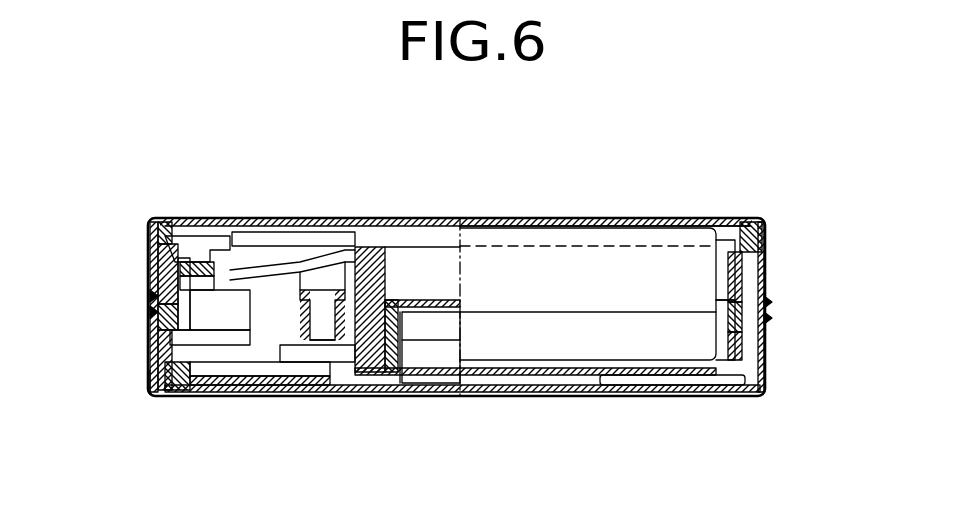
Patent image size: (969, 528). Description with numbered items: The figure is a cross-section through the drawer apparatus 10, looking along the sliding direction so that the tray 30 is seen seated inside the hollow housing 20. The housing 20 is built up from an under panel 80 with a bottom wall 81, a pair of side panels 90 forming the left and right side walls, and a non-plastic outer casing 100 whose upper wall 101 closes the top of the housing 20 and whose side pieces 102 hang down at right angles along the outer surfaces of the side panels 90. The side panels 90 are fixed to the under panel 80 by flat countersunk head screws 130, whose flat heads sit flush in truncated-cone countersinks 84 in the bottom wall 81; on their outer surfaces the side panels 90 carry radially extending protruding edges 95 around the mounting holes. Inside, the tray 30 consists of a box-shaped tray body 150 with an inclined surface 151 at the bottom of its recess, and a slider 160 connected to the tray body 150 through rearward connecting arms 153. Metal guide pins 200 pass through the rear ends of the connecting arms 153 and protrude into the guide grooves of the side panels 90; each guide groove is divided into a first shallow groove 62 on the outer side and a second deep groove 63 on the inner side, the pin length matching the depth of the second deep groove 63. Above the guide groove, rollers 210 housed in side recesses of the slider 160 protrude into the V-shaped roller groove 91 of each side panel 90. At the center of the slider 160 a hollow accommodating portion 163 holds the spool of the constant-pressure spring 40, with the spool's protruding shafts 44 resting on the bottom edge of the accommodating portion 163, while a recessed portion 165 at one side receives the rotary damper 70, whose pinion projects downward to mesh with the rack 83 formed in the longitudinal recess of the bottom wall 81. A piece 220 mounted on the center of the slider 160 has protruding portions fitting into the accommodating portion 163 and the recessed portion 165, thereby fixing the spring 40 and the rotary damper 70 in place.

The drawer apparatus 10 is at (706, 200).
The hollow housing 20 is at (650, 220).
The tray 30 is at (670, 378).
The constant-pressure spring (spring device) 40 is at (442, 370).
The protruding shafts 44 is at (396, 375).
The first shallow groove 62 is at (750, 340).
The second deep groove 63 is at (160, 338).
The rotary damper 70 is at (330, 380).
The under panel 80 is at (585, 390).
The bottom wall 81 is at (548, 388).
The rack 83 is at (318, 382).
The countersinks 84 is at (152, 394).
The side panels 90 is at (152, 222).
The roller groove 91 is at (172, 244).
The protruding edges 95 is at (150, 316).
The outer casing 100 is at (352, 222).
The upper wall 101 is at (165, 228).
The side pieces 102 is at (760, 246).
The flat countersunk head screws 130 is at (172, 392).
The tray body 150 is at (527, 275).
The inclined surface 151 is at (590, 320).
The connecting arms 153 is at (235, 382).
The slider 160 is at (210, 262).
The accommodating portion 163 is at (428, 300).
The recessed portion 165 is at (365, 378).
The guide pins 200 is at (165, 360).
The rollers 210 is at (185, 245).
The piece 220 is at (322, 262).